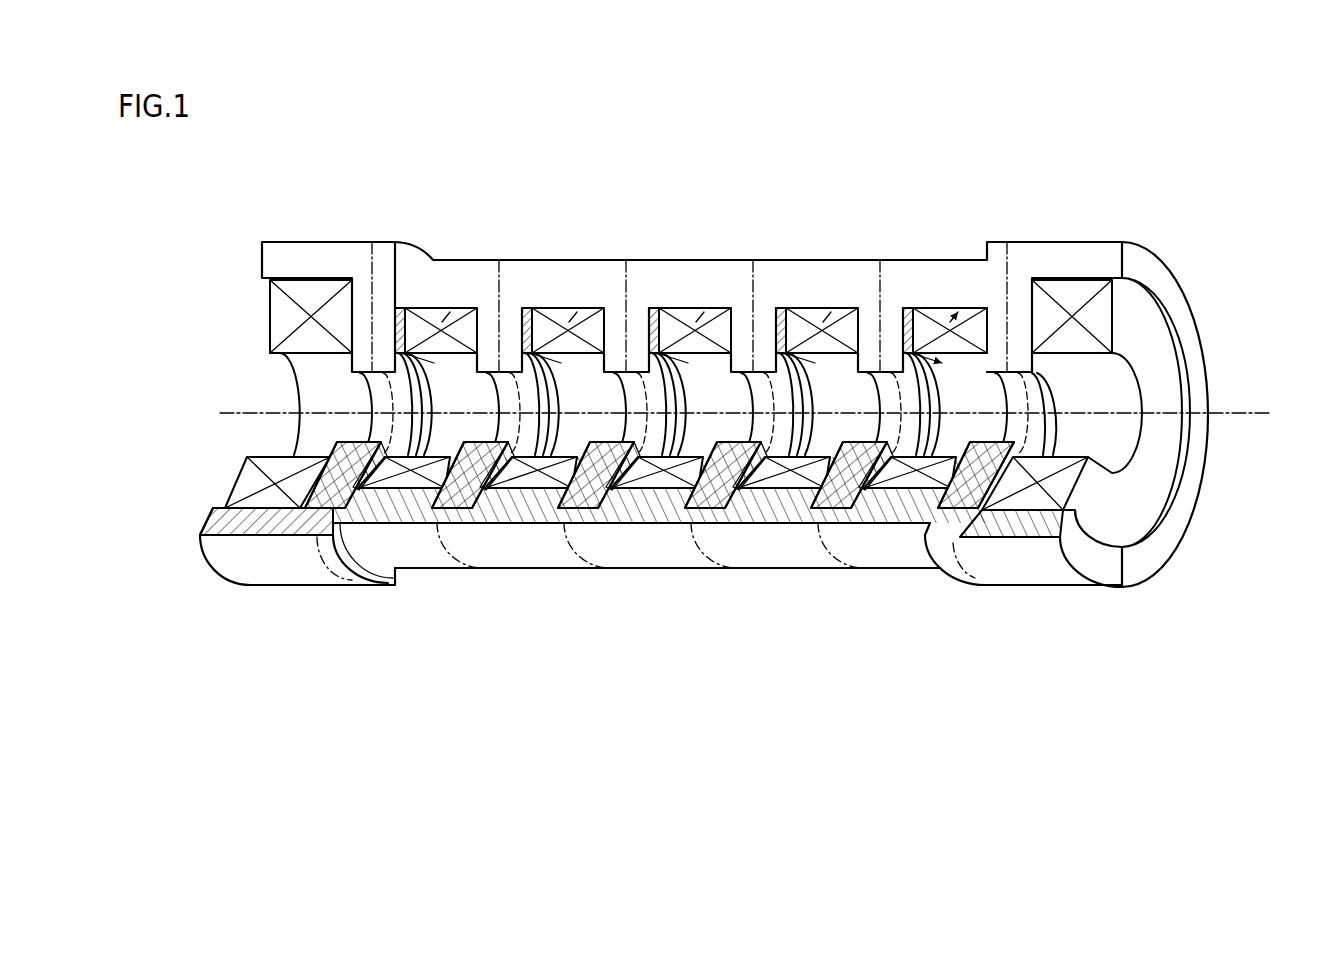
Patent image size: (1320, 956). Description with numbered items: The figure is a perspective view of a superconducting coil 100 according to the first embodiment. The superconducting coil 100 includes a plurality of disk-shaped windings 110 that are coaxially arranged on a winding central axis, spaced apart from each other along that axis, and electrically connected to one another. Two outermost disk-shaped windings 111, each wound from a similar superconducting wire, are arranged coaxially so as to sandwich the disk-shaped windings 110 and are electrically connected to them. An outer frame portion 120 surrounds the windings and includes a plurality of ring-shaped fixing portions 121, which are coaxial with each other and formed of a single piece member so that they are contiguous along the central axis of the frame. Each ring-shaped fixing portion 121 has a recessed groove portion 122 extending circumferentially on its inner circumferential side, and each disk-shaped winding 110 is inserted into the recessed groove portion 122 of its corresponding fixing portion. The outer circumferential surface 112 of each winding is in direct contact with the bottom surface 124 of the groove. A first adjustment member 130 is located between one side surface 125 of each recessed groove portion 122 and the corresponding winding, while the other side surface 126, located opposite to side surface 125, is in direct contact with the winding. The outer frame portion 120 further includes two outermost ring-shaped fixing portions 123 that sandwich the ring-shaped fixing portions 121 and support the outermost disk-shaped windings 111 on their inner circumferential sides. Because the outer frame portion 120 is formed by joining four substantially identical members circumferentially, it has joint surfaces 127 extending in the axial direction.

The superconducting coil 100 is at (1153, 188).
The disk-shaped windings 110 is at (457, 312).
The outermost disk-shaped windings 111 is at (327, 290).
The outer circumferential surface 112 is at (422, 306).
The outer frame portion 120 is at (1113, 263).
The ring-shaped fixing portions 121 is at (447, 553).
The recessed groove portion 122 is at (399, 309).
The outermost ring-shaped fixing portions 123 is at (293, 258).
The bottom surface 124 is at (442, 322).
The one side surface 125 is at (633, 490).
The other side surface 126 is at (685, 490).
The joint surfaces 127 is at (1123, 250).
The first adjustment member 130 is at (384, 492).